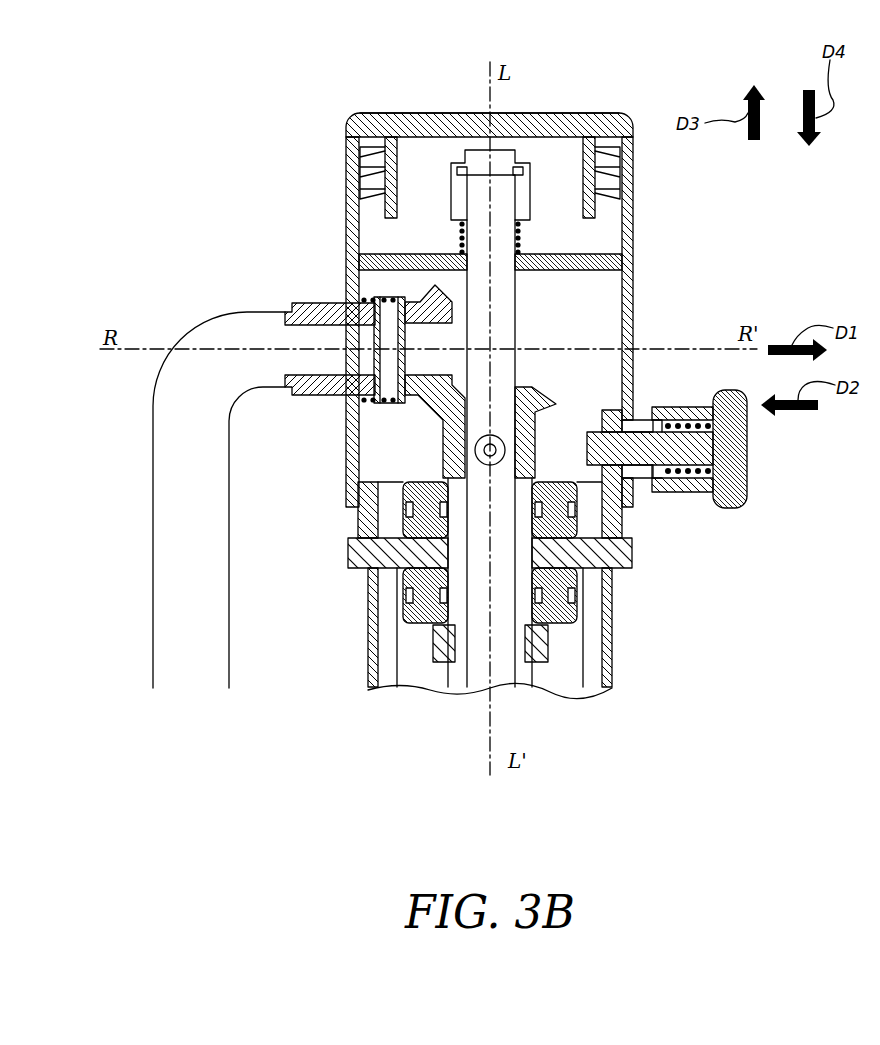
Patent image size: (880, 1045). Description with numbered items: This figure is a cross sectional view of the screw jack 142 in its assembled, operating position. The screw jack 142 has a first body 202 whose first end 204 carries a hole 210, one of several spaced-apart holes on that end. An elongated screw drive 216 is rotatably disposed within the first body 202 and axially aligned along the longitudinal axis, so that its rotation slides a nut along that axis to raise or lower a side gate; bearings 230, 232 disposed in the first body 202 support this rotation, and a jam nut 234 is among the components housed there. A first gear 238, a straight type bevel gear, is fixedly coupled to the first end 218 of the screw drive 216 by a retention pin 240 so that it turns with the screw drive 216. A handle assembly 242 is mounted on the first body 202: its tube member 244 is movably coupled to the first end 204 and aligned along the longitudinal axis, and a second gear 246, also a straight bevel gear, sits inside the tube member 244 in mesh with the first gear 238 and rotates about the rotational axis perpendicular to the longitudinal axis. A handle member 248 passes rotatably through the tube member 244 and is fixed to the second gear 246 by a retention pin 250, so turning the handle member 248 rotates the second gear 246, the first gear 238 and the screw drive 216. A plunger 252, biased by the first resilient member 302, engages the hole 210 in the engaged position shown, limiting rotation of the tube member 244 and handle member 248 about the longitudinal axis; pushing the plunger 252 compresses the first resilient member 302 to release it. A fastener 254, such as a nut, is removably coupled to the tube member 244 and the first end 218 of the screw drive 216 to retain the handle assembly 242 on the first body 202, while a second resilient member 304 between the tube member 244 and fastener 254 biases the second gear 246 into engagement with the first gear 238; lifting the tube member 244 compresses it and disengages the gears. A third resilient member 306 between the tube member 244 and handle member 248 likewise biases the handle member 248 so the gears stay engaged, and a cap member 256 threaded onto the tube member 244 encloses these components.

The screw jack 142 is at (676, 73).
The first body 202 is at (612, 647).
The first end 204 is at (664, 519).
The hole 210 is at (608, 432).
The screw drive 216 is at (513, 680).
The first end 218 is at (535, 380).
The bearing 230 is at (410, 523).
The bearing 232 is at (410, 605).
The jam nut 234 is at (433, 644).
The first gear 238 is at (453, 453).
The retention pin 240 is at (477, 446).
The handle assembly 242 is at (330, 246).
The tube member 244 is at (635, 210).
The second gear 246 is at (434, 287).
The handle member 248 is at (172, 553).
The retention pin 250 is at (388, 340).
The plunger 252 is at (730, 450).
The fastener 254 is at (522, 193).
The cap member 256 is at (537, 127).
The first resilient member 302 is at (708, 490).
The second resilient member 304 is at (522, 240).
The third resilient member 306 is at (363, 297).